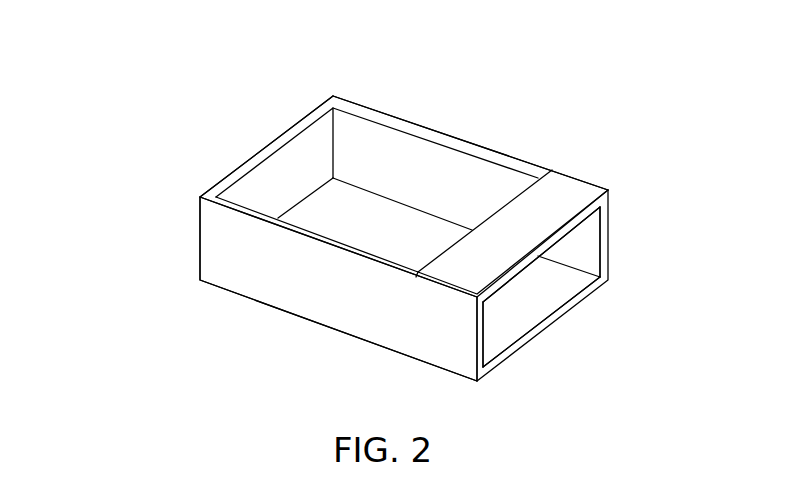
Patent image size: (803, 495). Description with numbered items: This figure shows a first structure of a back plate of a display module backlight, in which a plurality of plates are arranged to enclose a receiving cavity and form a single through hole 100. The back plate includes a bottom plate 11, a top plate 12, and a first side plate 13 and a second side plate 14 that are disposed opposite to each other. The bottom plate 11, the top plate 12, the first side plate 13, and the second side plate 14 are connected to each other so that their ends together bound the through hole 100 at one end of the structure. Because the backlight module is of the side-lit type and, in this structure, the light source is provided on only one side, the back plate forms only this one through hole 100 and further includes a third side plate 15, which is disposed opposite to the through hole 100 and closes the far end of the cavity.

The bottom plate 11 is at (338, 215).
The top plate 12 is at (563, 200).
The first side plate 13 is at (447, 173).
The second side plate 14 is at (235, 255).
The third side plate 15 is at (308, 145).
The through hole 100 is at (537, 279).